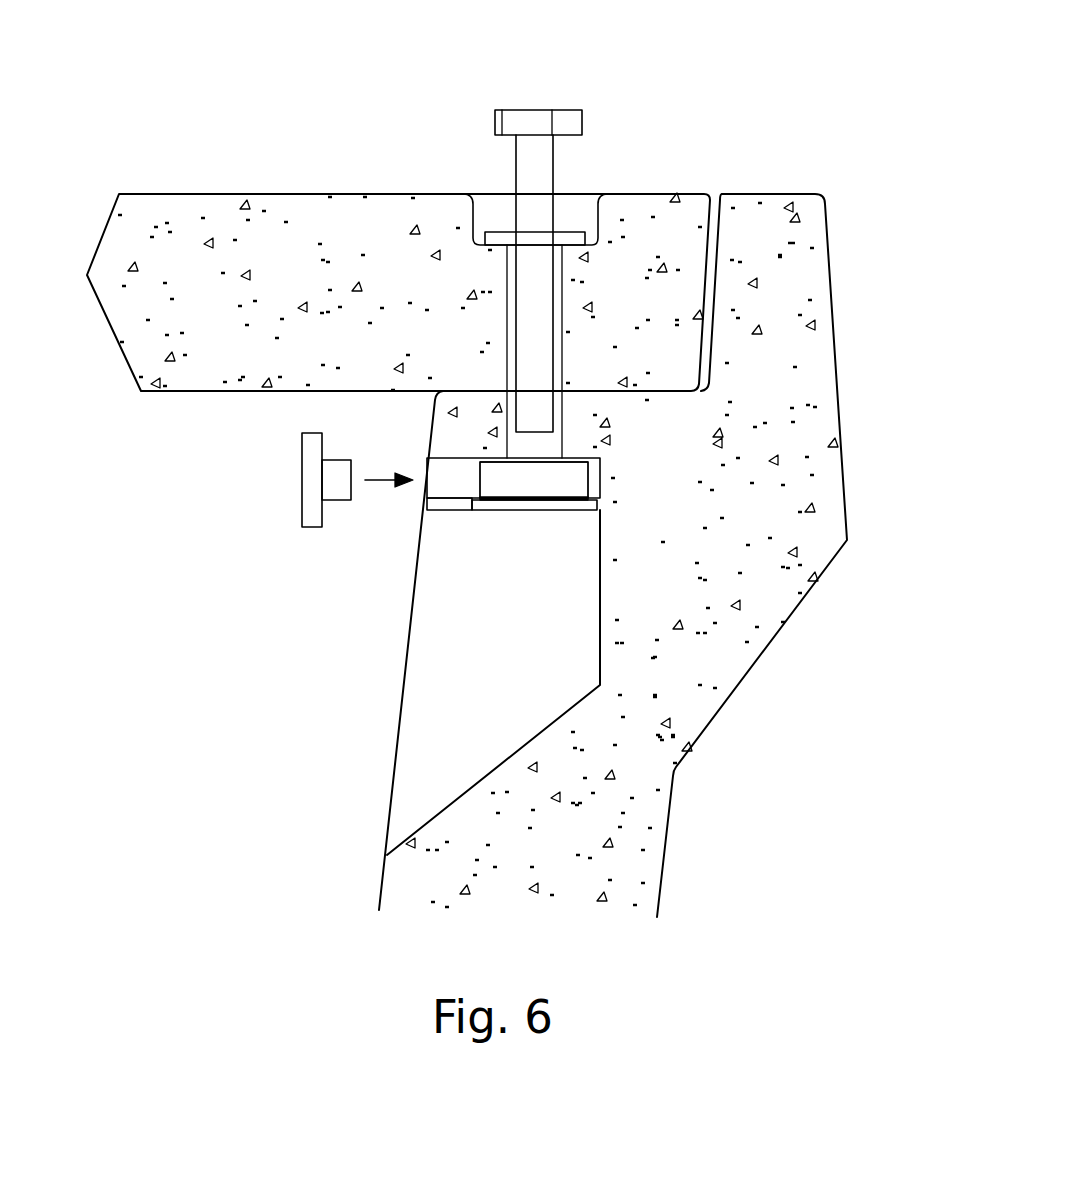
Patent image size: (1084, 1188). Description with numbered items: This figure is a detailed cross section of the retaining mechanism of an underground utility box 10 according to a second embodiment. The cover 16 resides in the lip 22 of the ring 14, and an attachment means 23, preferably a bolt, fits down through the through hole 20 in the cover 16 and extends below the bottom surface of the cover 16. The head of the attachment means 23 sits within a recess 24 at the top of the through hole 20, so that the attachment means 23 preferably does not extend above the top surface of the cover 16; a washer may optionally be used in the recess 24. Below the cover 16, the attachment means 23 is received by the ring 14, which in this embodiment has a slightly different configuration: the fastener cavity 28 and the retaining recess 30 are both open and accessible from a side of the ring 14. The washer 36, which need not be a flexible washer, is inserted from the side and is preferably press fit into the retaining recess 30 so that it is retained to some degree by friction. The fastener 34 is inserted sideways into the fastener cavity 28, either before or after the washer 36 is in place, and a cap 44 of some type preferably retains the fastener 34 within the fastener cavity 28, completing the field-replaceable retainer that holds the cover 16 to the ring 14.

The box 10 is at (804, 837).
The ring 14 is at (807, 350).
The cover 16 is at (218, 218).
The through hole 20 is at (586, 172).
The lip 22 is at (709, 208).
The attachment means 23 is at (532, 125).
The recess 24 is at (483, 210).
The fastener cavity 28 is at (445, 490).
The retaining recess 30 is at (457, 505).
The fastener 34 is at (493, 482).
The washer 36 is at (547, 505).
The cap 44 is at (310, 475).